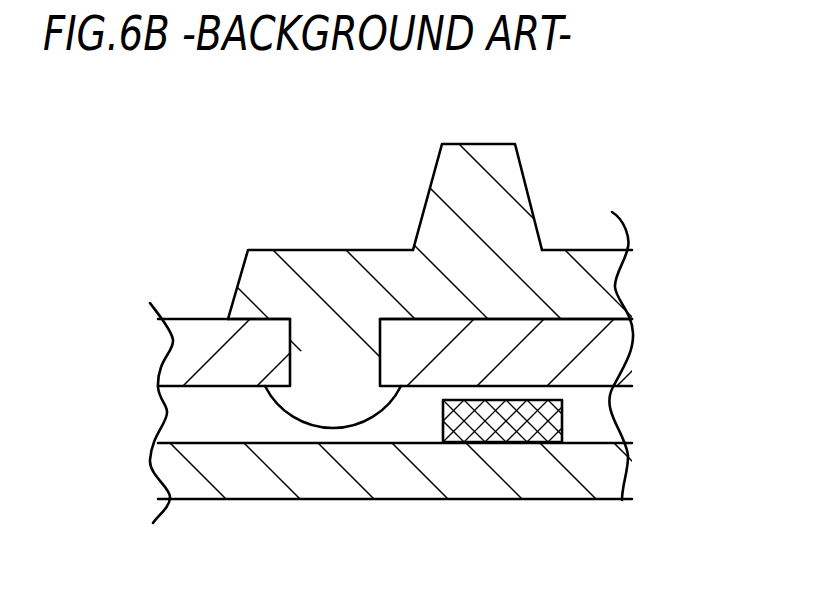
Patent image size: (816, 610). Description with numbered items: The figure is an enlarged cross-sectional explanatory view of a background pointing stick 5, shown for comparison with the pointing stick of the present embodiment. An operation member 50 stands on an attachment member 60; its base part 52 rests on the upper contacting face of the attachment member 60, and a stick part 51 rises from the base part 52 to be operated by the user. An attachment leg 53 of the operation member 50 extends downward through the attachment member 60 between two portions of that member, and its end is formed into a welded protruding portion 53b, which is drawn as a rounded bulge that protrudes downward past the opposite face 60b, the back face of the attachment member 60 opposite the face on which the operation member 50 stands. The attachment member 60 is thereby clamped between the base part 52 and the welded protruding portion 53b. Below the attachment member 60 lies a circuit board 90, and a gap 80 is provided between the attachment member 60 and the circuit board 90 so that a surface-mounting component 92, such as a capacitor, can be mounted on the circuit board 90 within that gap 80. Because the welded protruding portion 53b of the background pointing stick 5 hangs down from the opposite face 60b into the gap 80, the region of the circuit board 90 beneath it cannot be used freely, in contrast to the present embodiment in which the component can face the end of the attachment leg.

The background pointing stick 5 is at (371, 209).
The operation member 50 is at (552, 192).
The stick part 51 is at (497, 143).
The base part 52 is at (241, 272).
The attachment leg 53 is at (333, 350).
The welded protruding portion 53b is at (318, 410).
The attachment member 60 is at (612, 337).
The opposite face 60b is at (580, 387).
The gap 80 is at (210, 413).
The circuit board 90 is at (477, 485).
The surface-mounting component 92 is at (563, 415).